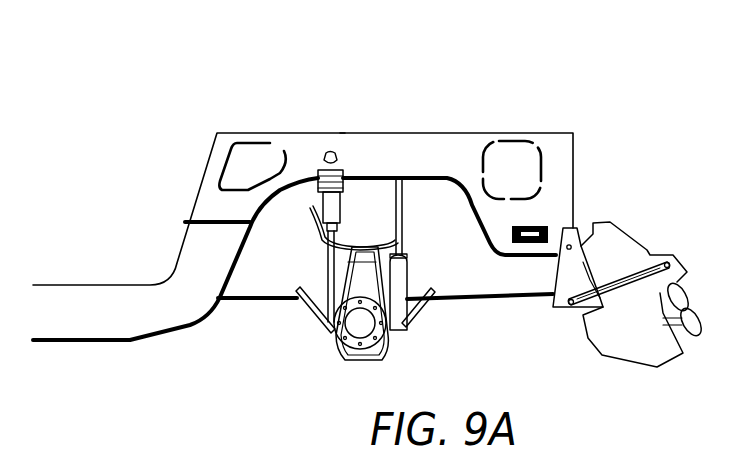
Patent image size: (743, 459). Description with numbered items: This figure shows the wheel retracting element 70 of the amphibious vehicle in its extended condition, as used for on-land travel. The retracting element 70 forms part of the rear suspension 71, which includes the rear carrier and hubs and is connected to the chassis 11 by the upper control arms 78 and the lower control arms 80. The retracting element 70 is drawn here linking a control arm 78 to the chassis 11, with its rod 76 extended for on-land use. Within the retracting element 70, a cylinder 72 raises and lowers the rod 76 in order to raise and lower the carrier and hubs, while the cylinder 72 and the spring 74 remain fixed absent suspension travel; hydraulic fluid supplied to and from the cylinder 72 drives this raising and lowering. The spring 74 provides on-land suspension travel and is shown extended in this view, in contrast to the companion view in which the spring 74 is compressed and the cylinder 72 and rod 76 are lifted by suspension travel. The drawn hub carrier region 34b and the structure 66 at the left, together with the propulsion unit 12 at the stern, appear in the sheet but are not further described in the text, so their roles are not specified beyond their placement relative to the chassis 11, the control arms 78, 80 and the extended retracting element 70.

The chassis 11 is at (454, 240).
The stern drive 12 is at (601, 126).
The floor 66 is at (82, 323).
The wheel retracting element 70 is at (376, 164).
The rear suspension 71 is at (343, 124).
The cylinder 72 is at (325, 160).
The spring 74 is at (342, 212).
The rod 76 is at (325, 263).
The upper control arm 78 is at (310, 210).
The lower control arm 80 is at (318, 315).
The engine mount 34b is at (360, 283).